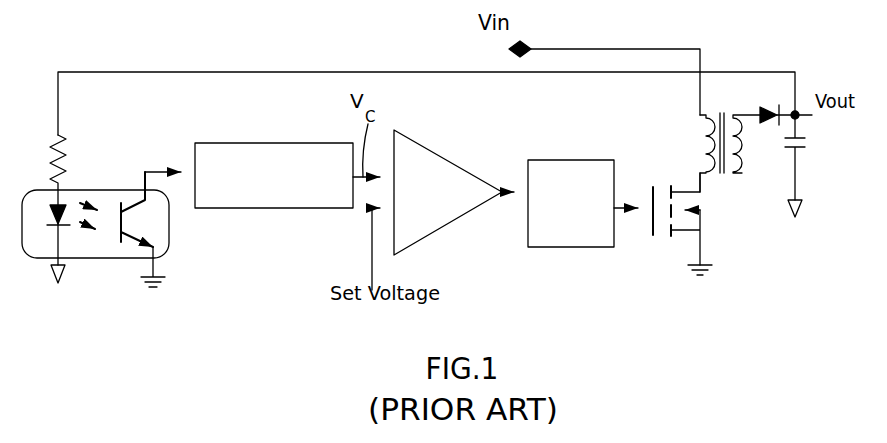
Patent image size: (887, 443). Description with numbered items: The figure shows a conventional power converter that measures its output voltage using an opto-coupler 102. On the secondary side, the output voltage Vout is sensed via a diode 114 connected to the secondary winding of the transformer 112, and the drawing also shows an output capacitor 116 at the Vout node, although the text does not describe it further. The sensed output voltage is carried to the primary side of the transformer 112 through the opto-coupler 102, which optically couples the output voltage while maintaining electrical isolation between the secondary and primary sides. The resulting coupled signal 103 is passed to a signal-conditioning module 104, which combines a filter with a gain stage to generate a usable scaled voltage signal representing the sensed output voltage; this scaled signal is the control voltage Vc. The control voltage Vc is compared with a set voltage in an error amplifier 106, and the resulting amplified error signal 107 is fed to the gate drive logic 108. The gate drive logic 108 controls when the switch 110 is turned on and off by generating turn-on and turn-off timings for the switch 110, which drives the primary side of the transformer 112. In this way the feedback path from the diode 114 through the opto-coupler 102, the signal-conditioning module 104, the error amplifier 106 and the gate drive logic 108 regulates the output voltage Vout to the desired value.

The opto-coupler 102 is at (68, 189).
The coupled signal 103 is at (154, 172).
The signal-conditioning module 104 is at (273, 143).
The error amplifier 106 is at (420, 137).
The amplified error signal 107 is at (505, 191).
The gate drive logic 108 is at (543, 160).
The switch 110 is at (688, 186).
The transformer 112 is at (720, 112).
The diode 114 is at (771, 124).
The output capacitor 116 is at (792, 150).